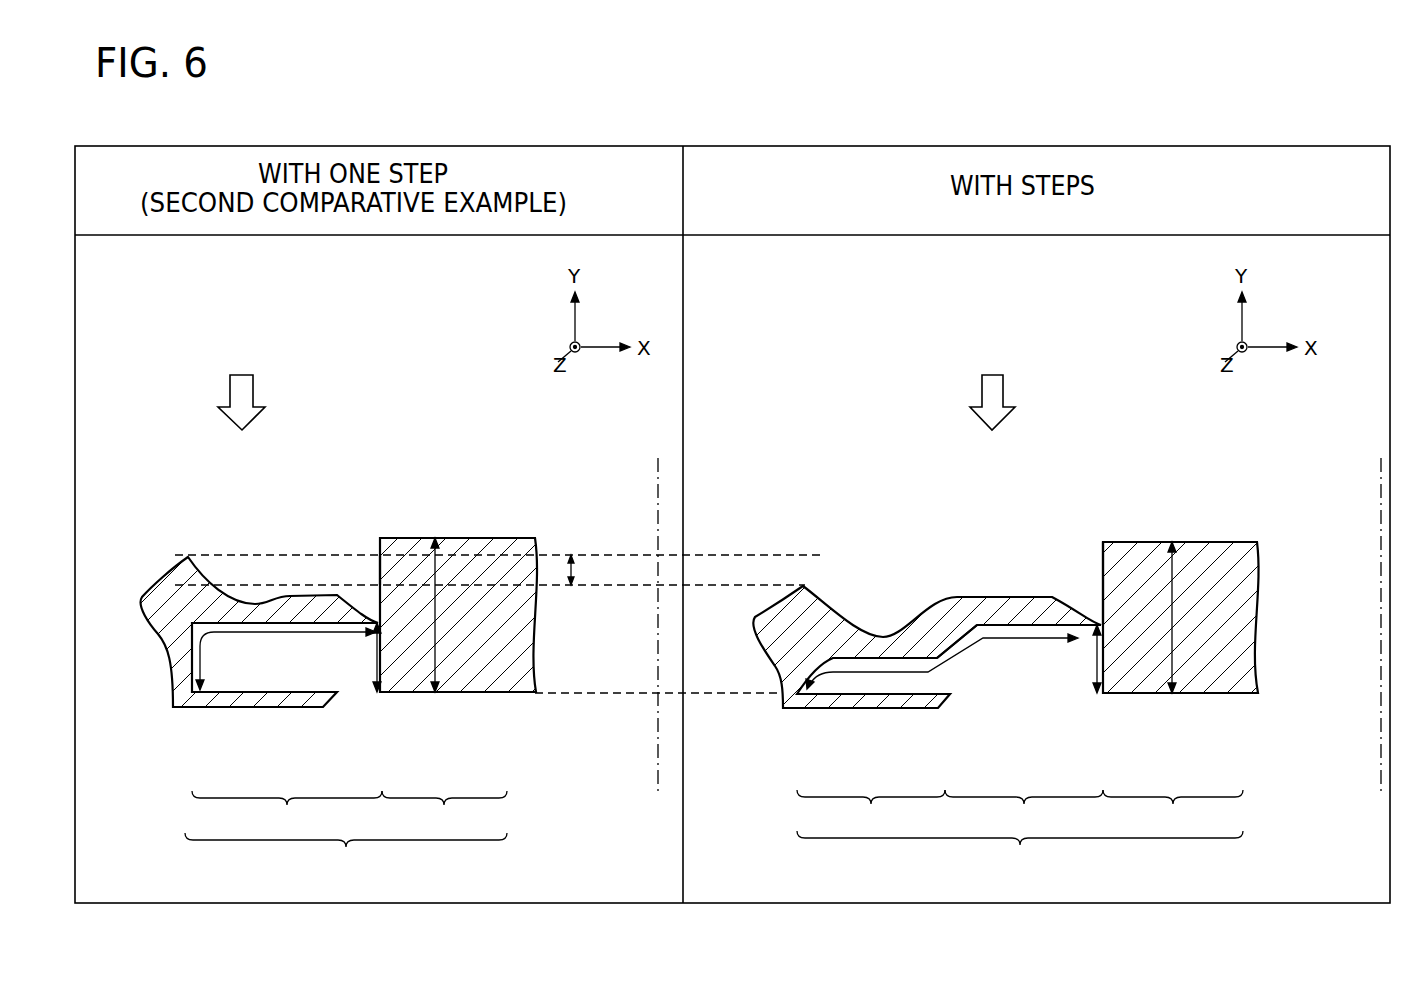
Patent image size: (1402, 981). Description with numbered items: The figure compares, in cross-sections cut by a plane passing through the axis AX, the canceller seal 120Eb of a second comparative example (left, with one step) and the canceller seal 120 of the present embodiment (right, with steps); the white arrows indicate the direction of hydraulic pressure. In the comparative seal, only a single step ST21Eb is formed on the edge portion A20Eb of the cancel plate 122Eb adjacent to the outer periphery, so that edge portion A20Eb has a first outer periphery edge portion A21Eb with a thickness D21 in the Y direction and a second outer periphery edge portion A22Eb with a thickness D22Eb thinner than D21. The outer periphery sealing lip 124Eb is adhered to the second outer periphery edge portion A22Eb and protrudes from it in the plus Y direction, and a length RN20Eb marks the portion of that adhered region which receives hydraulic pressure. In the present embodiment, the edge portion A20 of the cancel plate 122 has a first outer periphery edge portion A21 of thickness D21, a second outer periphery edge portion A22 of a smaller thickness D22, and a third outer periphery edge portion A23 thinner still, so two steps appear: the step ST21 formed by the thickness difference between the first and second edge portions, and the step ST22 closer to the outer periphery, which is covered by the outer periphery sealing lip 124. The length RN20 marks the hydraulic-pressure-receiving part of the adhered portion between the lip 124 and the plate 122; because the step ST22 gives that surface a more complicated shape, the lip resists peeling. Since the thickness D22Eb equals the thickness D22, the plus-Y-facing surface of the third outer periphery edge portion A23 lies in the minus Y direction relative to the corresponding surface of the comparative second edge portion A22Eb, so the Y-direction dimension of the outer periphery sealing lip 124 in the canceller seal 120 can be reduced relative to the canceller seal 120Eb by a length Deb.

The canceller seal of the second comparative example 120Eb is at (476, 439).
The outer periphery sealing lip of the second comparative example 124Eb is at (158, 598).
The cancel plate of the second comparative example 122Eb is at (478, 683).
The single step of the second comparative example ST21Eb is at (378, 570).
The length of hydraulic-pressure-receiving adhered portion (second comparative examp RN20Eb is at (270, 634).
The length of Y-direction reduction Deb is at (598, 569).
The thickness of first outer periphery edge portion D21 is at (826, 615).
The thickness of second outer periphery edge portion (second comparative example) D22Eb is at (339, 657).
The second outer periphery edge portion of the second comparative example A22Eb is at (287, 813).
The first outer periphery edge portion of the second comparative example A21Eb is at (444, 813).
The edge portion of the second comparative example cancel plate A20Eb is at (346, 855).
The axis AX is at (658, 722).
The canceller seal 120 is at (851, 456).
The outer periphery sealing lip 124 is at (800, 612).
The cancel plate 122 is at (1197, 695).
The second step ST22 is at (950, 648).
The first step ST21 is at (1103, 566).
The thickness of second outer periphery edge portion D22 is at (1120, 659).
The length of hydraulic-pressure-receiving adhered portion RN20 is at (1015, 674).
The third outer periphery edge portion A23 is at (871, 813).
The second outer periphery edge portion A22 is at (1024, 813).
The first outer periphery edge portion A21 is at (1173, 813).
The edge portion A20 is at (1020, 854).